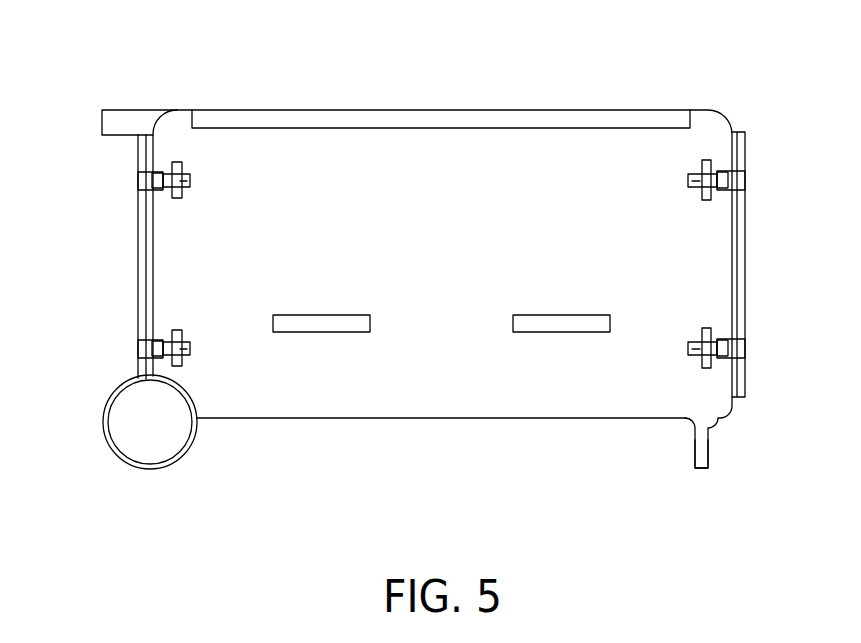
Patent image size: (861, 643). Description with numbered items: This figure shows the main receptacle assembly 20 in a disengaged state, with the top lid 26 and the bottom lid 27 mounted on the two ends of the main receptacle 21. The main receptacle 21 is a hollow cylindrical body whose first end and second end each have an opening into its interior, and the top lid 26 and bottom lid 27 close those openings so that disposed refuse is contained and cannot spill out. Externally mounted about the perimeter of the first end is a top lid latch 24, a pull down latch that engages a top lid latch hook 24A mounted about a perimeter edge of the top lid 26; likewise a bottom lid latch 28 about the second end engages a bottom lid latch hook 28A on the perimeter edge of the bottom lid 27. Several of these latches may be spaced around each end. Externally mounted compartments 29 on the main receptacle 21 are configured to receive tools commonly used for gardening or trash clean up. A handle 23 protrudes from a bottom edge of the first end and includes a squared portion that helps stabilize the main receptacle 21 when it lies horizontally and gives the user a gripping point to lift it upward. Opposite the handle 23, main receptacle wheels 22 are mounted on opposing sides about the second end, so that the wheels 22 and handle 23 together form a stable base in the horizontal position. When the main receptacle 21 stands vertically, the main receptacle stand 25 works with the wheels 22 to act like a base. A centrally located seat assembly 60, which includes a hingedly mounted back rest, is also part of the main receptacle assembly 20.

The main receptacle assembly 20 is at (480, 418).
The main receptacle 21 is at (370, 392).
The main receptacle wheels 22 is at (148, 470).
The handle 23 is at (700, 470).
The top lid latch 24 is at (700, 180).
The top lid latch hook 24A is at (745, 182).
The main receptacle stand 25 is at (135, 123).
The top lid 26 is at (745, 250).
The bottom lid 27 is at (140, 267).
The bottom lid latch 28 is at (190, 181).
The bottom lid latch hook 28A is at (140, 183).
The compartments 29 is at (320, 332).
The seat assembly 60 is at (628, 110).